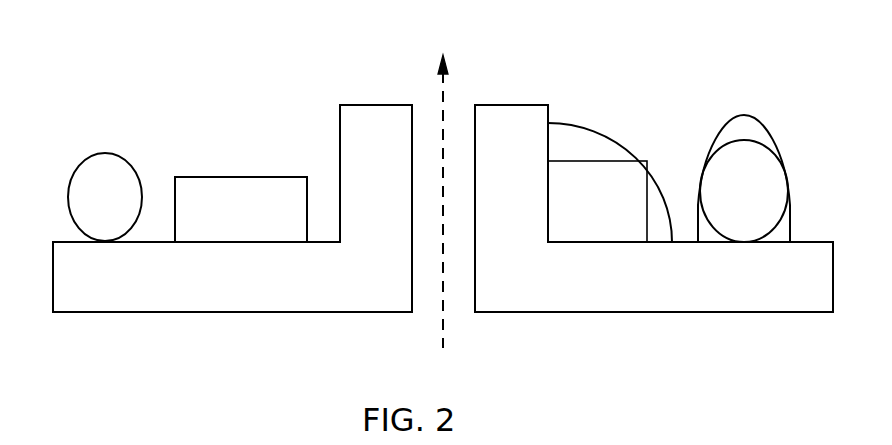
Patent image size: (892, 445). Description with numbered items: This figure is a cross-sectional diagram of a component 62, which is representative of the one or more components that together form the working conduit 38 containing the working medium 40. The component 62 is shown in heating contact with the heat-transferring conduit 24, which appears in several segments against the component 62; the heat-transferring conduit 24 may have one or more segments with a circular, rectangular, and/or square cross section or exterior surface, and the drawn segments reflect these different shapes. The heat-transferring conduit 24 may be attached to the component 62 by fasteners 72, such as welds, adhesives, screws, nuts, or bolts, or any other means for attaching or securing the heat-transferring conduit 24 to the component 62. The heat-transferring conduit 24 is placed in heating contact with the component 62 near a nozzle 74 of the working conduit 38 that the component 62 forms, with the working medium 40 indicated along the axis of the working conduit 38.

The heat-transferring conduit 24 is at (98, 153).
The working conduit 38 is at (412, 101).
The working medium 40 is at (441, 56).
The component 62 is at (262, 294).
The fastener 72 is at (712, 135).
The nozzle 74 is at (334, 49).